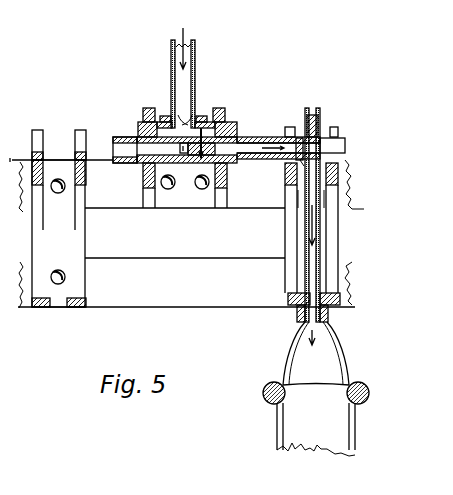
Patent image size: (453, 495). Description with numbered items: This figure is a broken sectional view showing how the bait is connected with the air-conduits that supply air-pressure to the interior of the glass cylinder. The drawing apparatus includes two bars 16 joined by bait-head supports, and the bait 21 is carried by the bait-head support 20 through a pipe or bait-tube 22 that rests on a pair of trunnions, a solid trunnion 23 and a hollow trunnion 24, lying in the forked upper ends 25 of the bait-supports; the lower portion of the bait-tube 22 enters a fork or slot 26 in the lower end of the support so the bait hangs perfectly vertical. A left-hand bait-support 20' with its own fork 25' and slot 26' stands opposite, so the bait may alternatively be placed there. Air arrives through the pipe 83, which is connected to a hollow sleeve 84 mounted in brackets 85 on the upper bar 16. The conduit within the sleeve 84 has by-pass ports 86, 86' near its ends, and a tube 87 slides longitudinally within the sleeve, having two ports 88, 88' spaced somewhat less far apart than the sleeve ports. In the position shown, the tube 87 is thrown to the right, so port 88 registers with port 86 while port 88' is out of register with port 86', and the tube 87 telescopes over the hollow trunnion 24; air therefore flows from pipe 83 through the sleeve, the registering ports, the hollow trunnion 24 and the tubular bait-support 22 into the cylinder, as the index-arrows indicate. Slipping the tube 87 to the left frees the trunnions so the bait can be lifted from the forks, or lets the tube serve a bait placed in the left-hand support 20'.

The bars 16 is at (187, 233).
The bait-head support 20 is at (279, 228).
The left-hand bait-support 20' is at (59, 233).
The bait 21 is at (316, 389).
The bait-tube 22 is at (320, 222).
The solid trunnion 23 is at (340, 150).
The hollow trunnion 24 is at (282, 165).
The forked upper ends 25 is at (341, 100).
The post 25' is at (54, 128).
The fork or slot 26 is at (334, 318).
The bracket 26' is at (59, 321).
The pipe 83 is at (199, 78).
The hollow sleeve 84 is at (225, 120).
The brackets 85 is at (226, 118).
The by-pass port 86 is at (282, 115).
The by-pass port 86' is at (158, 118).
The tube 87 is at (245, 165).
The port 88 is at (204, 200).
The port 88' is at (177, 193).